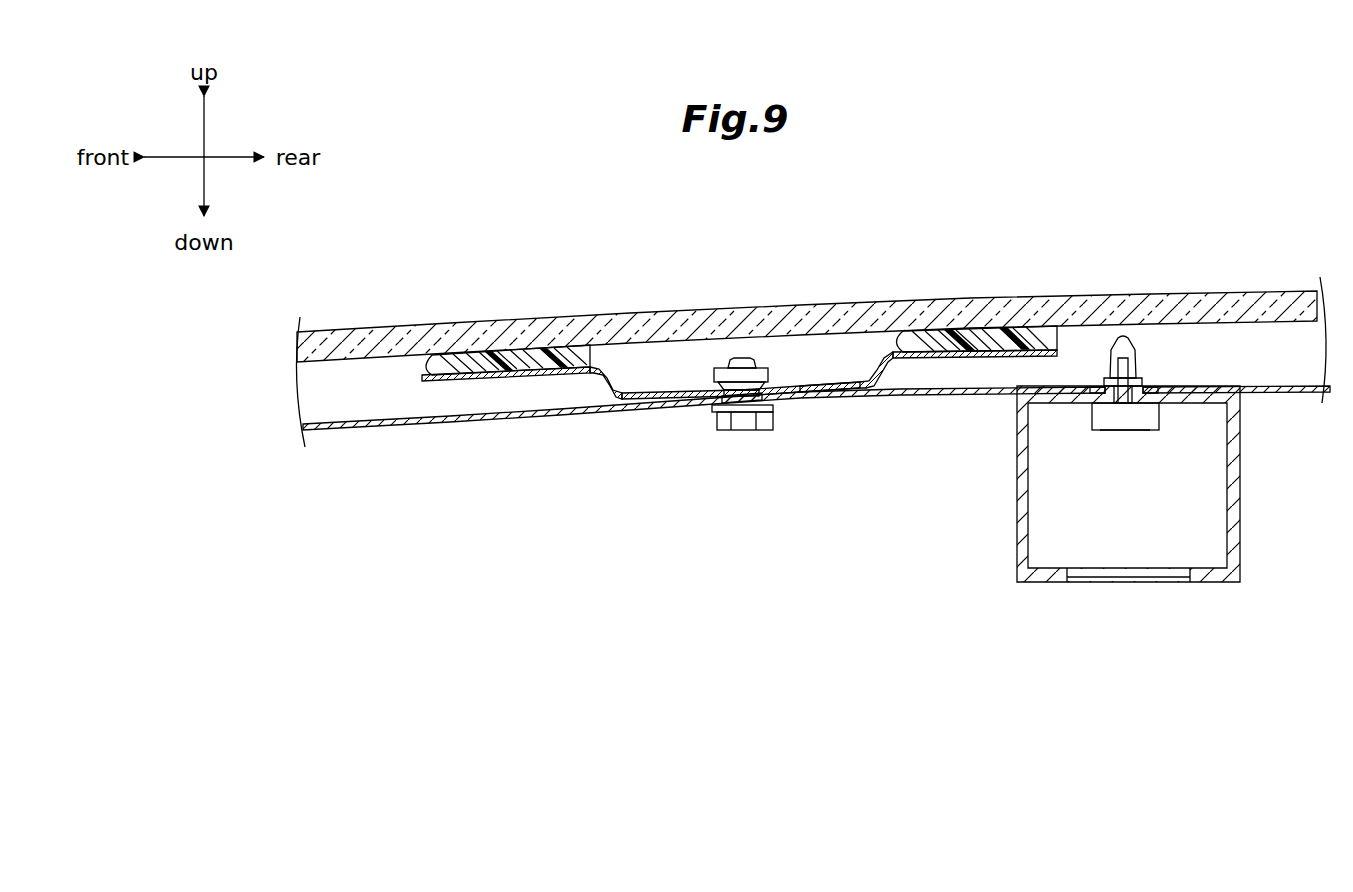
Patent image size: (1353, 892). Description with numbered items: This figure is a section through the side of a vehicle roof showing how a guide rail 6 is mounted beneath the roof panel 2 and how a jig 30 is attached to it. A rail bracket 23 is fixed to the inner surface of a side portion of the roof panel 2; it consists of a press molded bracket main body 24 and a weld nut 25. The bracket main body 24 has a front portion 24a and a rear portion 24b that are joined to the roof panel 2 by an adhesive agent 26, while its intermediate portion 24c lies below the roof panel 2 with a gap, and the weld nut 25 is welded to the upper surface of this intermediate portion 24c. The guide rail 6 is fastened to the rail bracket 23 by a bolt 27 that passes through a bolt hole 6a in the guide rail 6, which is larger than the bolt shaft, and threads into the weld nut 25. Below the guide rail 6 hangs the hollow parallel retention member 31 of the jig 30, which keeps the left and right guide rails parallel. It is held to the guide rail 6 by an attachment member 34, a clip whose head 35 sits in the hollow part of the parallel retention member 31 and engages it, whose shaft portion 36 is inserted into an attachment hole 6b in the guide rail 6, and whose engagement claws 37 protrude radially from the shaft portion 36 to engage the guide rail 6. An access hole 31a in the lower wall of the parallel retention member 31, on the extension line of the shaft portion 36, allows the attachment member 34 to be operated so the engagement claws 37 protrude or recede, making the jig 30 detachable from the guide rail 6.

The roof panel 2 is at (887, 311).
The guide rail 6 is at (388, 432).
The bolt hole 6a is at (742, 431).
The attachment hole 6b is at (1113, 362).
The rail bracket 23 is at (586, 380).
The bracket main body 24 is at (739, 416).
The front portion 24a is at (482, 381).
The rear portion 24b is at (978, 360).
The intermediate portion 24c is at (846, 397).
The weld nut 25 is at (770, 381).
The adhesive agent 26 is at (538, 343).
The bolt 27 is at (765, 429).
The jig 30 is at (1171, 533).
The parallel retention member 31 is at (1239, 453).
The access hole 31a is at (1080, 583).
The attachment member 34 is at (1122, 436).
The head 35 is at (1091, 419).
The shaft portion 36 is at (1159, 327).
The engagement claws 37 is at (1139, 384).